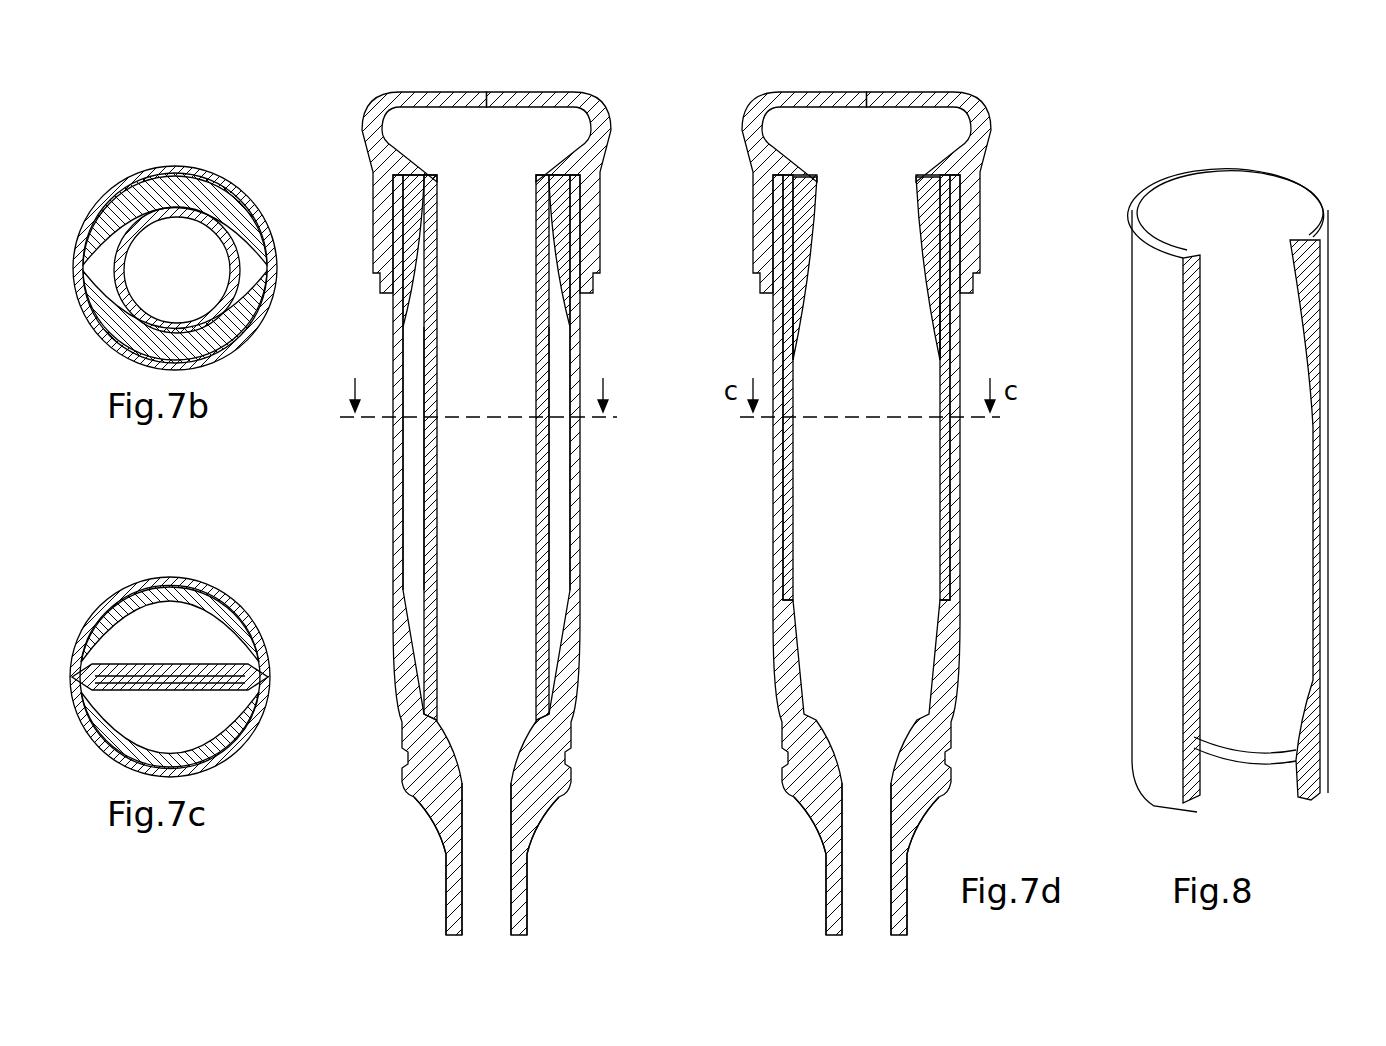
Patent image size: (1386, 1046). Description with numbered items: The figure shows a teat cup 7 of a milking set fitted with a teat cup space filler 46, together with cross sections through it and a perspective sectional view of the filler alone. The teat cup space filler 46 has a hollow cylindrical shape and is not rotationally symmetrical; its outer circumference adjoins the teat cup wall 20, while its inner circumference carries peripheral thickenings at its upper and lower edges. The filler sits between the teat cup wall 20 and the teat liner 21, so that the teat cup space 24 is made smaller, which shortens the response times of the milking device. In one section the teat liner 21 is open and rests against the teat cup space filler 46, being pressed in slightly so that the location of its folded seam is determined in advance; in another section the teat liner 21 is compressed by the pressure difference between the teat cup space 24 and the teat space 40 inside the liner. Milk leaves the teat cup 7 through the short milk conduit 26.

In FIG. 7A, the teat cup 7 is at (729, 103).
In FIG. 7A, the teat cup wall 20 is at (580, 358).
In FIG. 7D, the teat cup wall 20 is at (775, 358).
In FIG. 7B, the teat cup wall 20 is at (110, 197).
In FIG. 7C, the teat cup wall 20 is at (103, 607).
In FIG. 7B, the teat liner 21 is at (193, 210).
In FIG. 7C, the teat liner 21 is at (167, 667).
In FIG. 7A, the teat cup space 24 is at (557, 325).
In FIG. 7D, the teat cup space 24 is at (793, 306).
In FIG. 7B, the teat cup space 24 is at (247, 253).
In FIG. 7C, the teat cup space 24 is at (195, 650).
In FIG. 7A, the short milk conduit 26 is at (508, 874).
In FIG. 7D, the short milk conduit 26 is at (826, 878).
In FIG. 7A, the teat space 40 is at (513, 303).
In FIG. 7D, the teat space 40 is at (838, 297).
In FIG. 7A, the teat cup space filler 46 is at (583, 203).
In FIG. 7D, the teat cup space filler 46 is at (778, 205).
In FIG. 7B, the teat cup space filler 46 is at (156, 190).
In FIG. 7C, the teat cup space filler 46 is at (140, 607).
In FIG. 8, the teat cup space filler 46 is at (1124, 180).